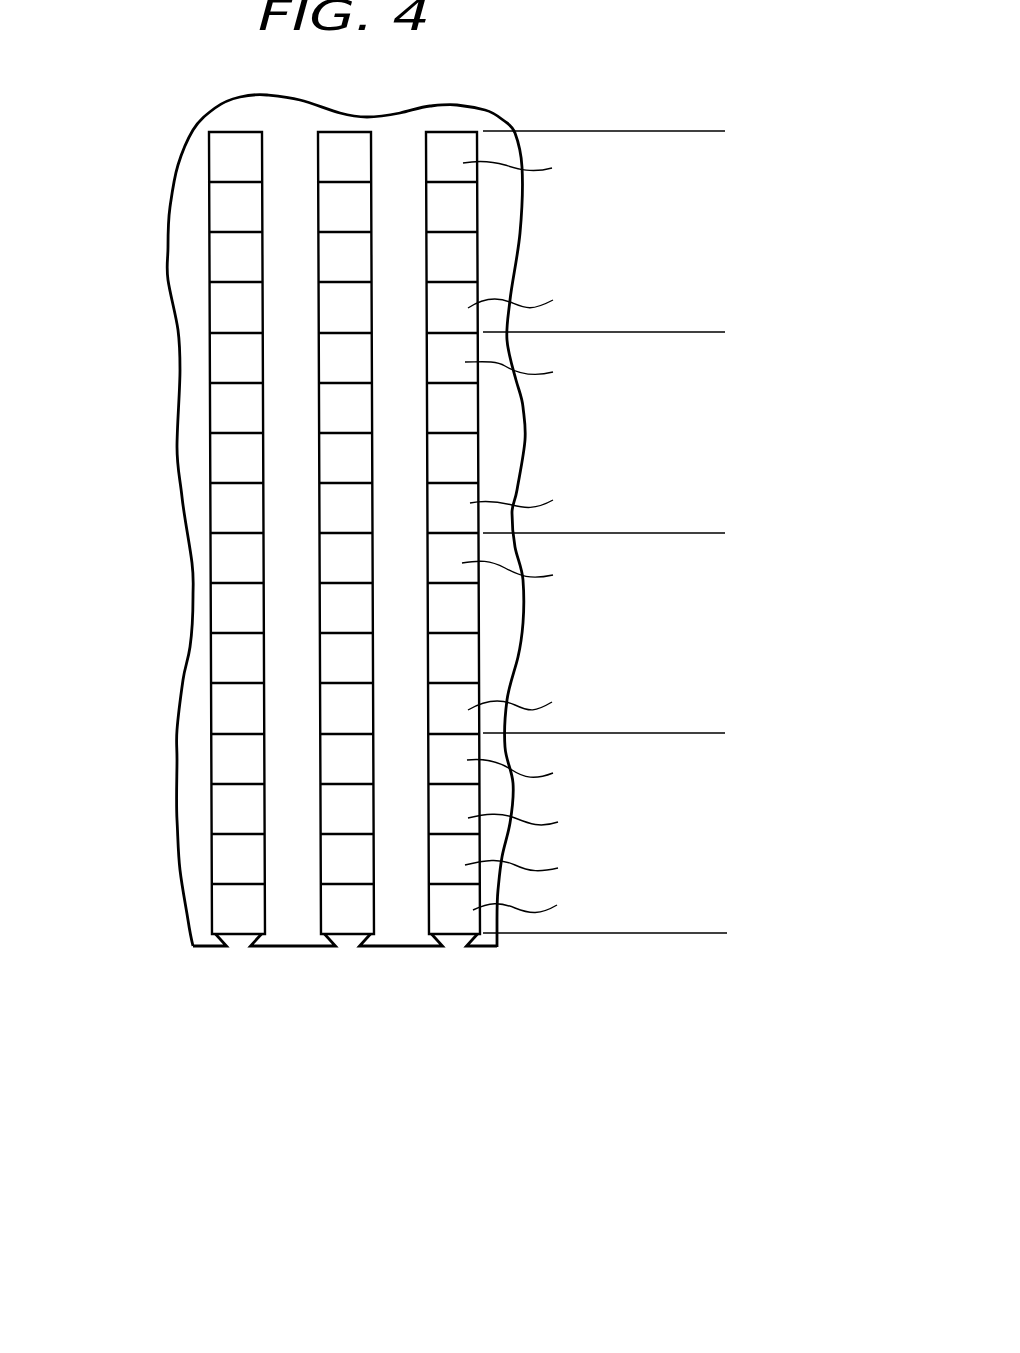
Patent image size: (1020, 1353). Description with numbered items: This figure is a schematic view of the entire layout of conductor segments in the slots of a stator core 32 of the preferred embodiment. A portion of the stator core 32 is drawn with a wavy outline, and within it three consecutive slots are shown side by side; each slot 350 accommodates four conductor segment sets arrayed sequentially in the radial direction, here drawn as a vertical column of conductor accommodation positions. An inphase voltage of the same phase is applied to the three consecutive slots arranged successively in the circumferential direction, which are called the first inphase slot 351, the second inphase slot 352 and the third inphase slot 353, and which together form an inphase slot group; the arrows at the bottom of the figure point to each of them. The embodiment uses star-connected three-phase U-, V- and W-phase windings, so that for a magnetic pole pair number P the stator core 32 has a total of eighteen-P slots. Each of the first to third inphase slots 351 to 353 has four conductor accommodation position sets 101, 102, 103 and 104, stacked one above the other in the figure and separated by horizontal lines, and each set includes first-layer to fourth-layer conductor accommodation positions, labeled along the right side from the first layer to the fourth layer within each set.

The stator core 32 is at (186, 371).
The slot 350 is at (276, 724).
The first inphase slot 351 is at (240, 975).
The second inphase slot 352 is at (348, 975).
The third inphase slot 353 is at (455, 975).
The conductor accommodation position set 101 is at (727, 838).
The conductor accommodation position set 102 is at (668, 645).
The conductor accommodation position set 103 is at (660, 442).
The conductor accommodation position set 104 is at (652, 252).